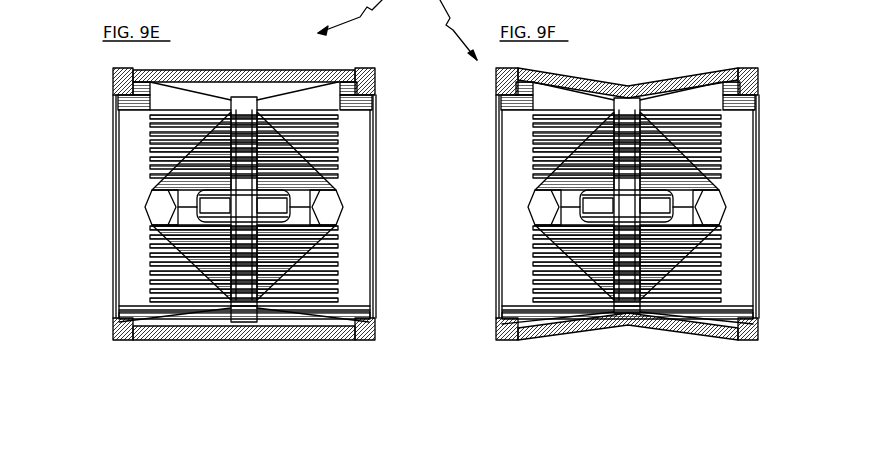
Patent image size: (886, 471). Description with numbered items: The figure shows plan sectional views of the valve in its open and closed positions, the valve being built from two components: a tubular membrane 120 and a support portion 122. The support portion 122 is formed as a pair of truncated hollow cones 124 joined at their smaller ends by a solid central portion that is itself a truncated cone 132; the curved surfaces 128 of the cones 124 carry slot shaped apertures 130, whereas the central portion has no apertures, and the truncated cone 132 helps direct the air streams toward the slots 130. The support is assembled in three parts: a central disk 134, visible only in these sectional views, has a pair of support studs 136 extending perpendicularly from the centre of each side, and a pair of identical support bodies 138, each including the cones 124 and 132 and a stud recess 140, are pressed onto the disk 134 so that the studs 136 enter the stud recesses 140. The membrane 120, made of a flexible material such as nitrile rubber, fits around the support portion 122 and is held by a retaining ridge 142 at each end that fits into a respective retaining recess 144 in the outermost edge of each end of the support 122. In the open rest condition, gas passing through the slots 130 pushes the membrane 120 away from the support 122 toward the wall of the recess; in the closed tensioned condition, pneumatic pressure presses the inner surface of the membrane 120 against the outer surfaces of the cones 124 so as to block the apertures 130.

In FIG. 9E, the tubular membrane 120 is at (217, 72).
In FIG. 9F, the tubular membrane 120 is at (598, 72).
In FIG. 9E, the support portion 122 is at (180, 318).
In FIG. 9F, the support portion 122 is at (718, 157).
In FIG. 9E, the truncated hollow cones 124 is at (148, 318).
In FIG. 9F, the truncated hollow cones 124 is at (533, 318).
In FIG. 9E, the curved surfaces 128 is at (350, 283).
In FIG. 9F, the curved surfaces 128 is at (785, 282).
In FIG. 9E, the slot shaped apertures 130 is at (152, 257).
In FIG. 9F, the slot shaped apertures 130 is at (614, 212).
In FIG. 9E, the truncated cone 132 is at (200, 163).
In FIG. 9F, the truncated cone 132 is at (593, 158).
In FIG. 9E, the central disk 134 is at (240, 318).
In FIG. 9F, the central disk 134 is at (612, 262).
In FIG. 9E, the support studs 136 is at (197, 215).
In FIG. 9F, the support studs 136 is at (541, 302).
In FIG. 9E, the support bodies 138 is at (117, 103).
In FIG. 9F, the support bodies 138 is at (584, 200).
In FIG. 9E, the stud recess 140 is at (148, 200).
In FIG. 9F, the stud recess 140 is at (568, 207).
In FIG. 9E, the retaining ridge 142 is at (115, 342).
In FIG. 9F, the retaining ridge 142 is at (500, 342).
In FIG. 9E, the retaining recess 144 is at (112, 323).
In FIG. 9F, the retaining recess 144 is at (498, 323).